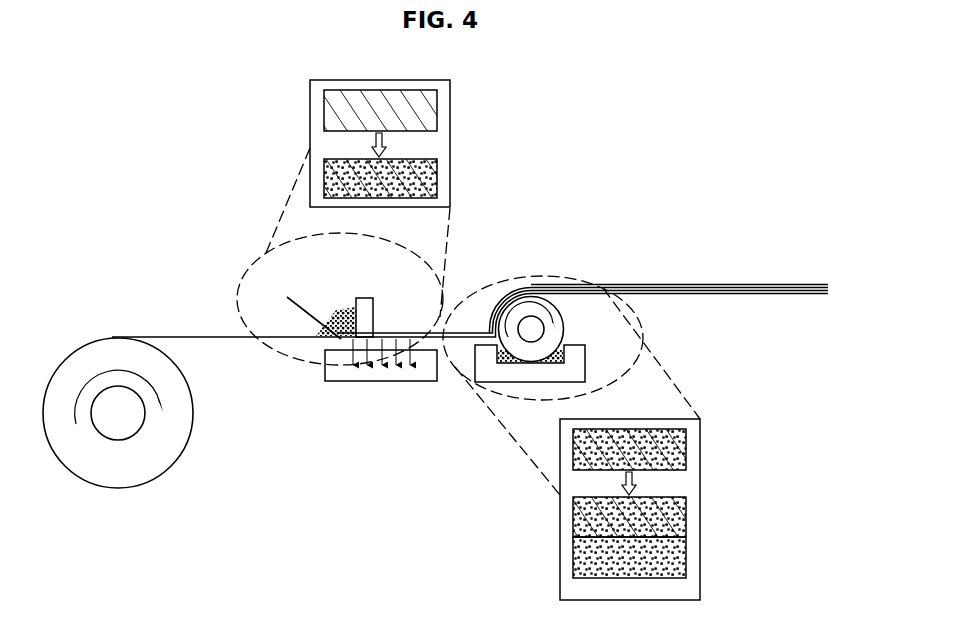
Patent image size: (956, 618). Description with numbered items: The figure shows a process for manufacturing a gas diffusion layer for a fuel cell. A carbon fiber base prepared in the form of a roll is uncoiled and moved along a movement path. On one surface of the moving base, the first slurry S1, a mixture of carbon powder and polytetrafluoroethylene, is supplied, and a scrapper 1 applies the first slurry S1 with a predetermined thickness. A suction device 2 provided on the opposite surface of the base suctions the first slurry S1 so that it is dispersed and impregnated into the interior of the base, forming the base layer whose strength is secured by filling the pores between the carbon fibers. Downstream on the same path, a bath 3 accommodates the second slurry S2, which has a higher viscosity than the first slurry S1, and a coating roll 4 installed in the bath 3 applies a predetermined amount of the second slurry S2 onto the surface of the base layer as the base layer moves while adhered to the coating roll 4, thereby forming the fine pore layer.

The scrapper 1 is at (363, 303).
The suction device 2 is at (418, 374).
The bath 3 is at (576, 373).
The coating roll 4 is at (543, 307).
The first slurry S1 is at (332, 312).
The second slurry S2 is at (578, 357).